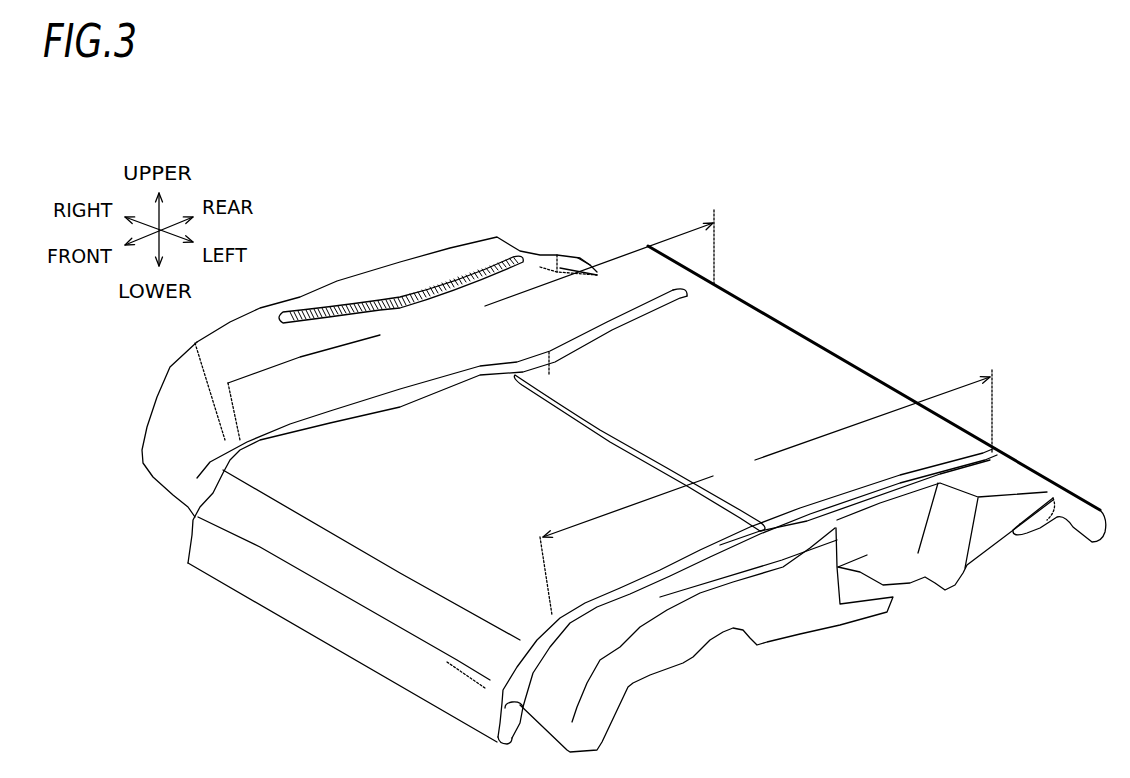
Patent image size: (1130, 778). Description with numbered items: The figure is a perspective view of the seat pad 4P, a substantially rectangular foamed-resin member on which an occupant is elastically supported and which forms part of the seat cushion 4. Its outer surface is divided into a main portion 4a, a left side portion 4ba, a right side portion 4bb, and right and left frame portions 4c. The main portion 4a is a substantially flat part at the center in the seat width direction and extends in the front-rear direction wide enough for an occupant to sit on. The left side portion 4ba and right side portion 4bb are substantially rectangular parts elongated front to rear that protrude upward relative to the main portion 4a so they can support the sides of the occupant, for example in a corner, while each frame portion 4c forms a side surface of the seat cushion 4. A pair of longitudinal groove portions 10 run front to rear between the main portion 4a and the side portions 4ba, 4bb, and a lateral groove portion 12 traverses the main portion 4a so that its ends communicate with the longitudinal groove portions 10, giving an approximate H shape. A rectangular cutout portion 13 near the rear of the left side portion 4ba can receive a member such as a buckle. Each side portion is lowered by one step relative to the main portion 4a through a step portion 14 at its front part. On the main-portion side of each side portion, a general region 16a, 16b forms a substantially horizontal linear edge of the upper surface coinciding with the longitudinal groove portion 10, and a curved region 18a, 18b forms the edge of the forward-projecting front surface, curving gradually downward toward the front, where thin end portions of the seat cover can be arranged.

The seat cushion 4 is at (624, 476).
The seat pad 4P is at (875, 290).
The main portion 4a is at (497, 494).
The left side portion 4ba is at (718, 588).
The right side portion 4bb is at (446, 362).
The frame portion 4c is at (693, 644).
The longitudinal groove portion 10 is at (390, 407).
The lateral groove portion 12 is at (628, 437).
The cutout portion 13 is at (886, 524).
The step portion 14 is at (192, 520).
The general region 16a is at (767, 453).
The general region 16b is at (380, 335).
The curved region 18a is at (543, 537).
The curved region 18b is at (228, 383).